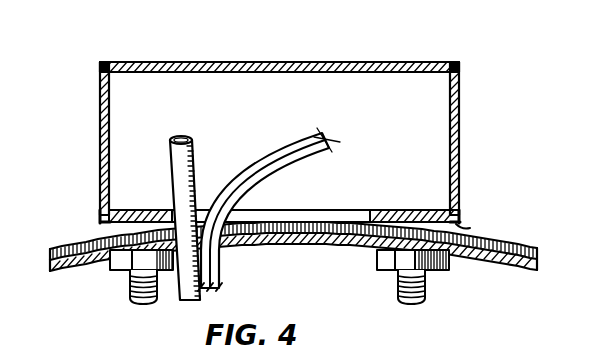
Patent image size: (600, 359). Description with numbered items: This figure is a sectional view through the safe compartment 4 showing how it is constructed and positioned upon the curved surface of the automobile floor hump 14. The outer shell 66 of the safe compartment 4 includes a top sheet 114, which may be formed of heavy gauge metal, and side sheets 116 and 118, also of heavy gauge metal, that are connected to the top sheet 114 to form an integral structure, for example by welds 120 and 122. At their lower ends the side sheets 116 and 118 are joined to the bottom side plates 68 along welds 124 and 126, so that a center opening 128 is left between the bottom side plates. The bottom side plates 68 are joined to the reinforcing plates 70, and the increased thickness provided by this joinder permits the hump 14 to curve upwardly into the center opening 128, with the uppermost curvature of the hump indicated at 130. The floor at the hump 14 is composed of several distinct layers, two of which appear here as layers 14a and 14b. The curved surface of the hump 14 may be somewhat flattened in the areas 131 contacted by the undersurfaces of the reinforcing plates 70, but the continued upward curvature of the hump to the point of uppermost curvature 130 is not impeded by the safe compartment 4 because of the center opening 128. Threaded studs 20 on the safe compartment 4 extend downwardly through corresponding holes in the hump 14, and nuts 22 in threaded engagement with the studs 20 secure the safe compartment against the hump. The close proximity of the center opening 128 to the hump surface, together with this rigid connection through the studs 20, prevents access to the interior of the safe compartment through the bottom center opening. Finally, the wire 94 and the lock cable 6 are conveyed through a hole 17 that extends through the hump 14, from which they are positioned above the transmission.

The safe compartment 4 is at (288, 108).
The lock cable 6 is at (193, 160).
The hump 14 is at (312, 255).
The layer of the hump 14a is at (505, 273).
The layer of the hump 14b is at (312, 220).
The hole 17 is at (226, 252).
The threaded studs 20 is at (400, 288).
The nuts 22 is at (441, 272).
The outer shell 66 is at (340, 63).
The bottom side plates 68 is at (139, 209).
The reinforcing plates 70 is at (277, 285).
The wire 94 is at (269, 208).
The top sheet 114 is at (186, 60).
The side sheet 116 is at (462, 120).
The side sheet 118 is at (98, 130).
The weld 120 is at (461, 68).
The weld 122 is at (102, 66).
The weld 124 is at (460, 220).
The weld 126 is at (101, 214).
The center opening 128 is at (292, 222).
The uppermost curvature 130 is at (281, 213).
The flattened areas 131 is at (462, 226).